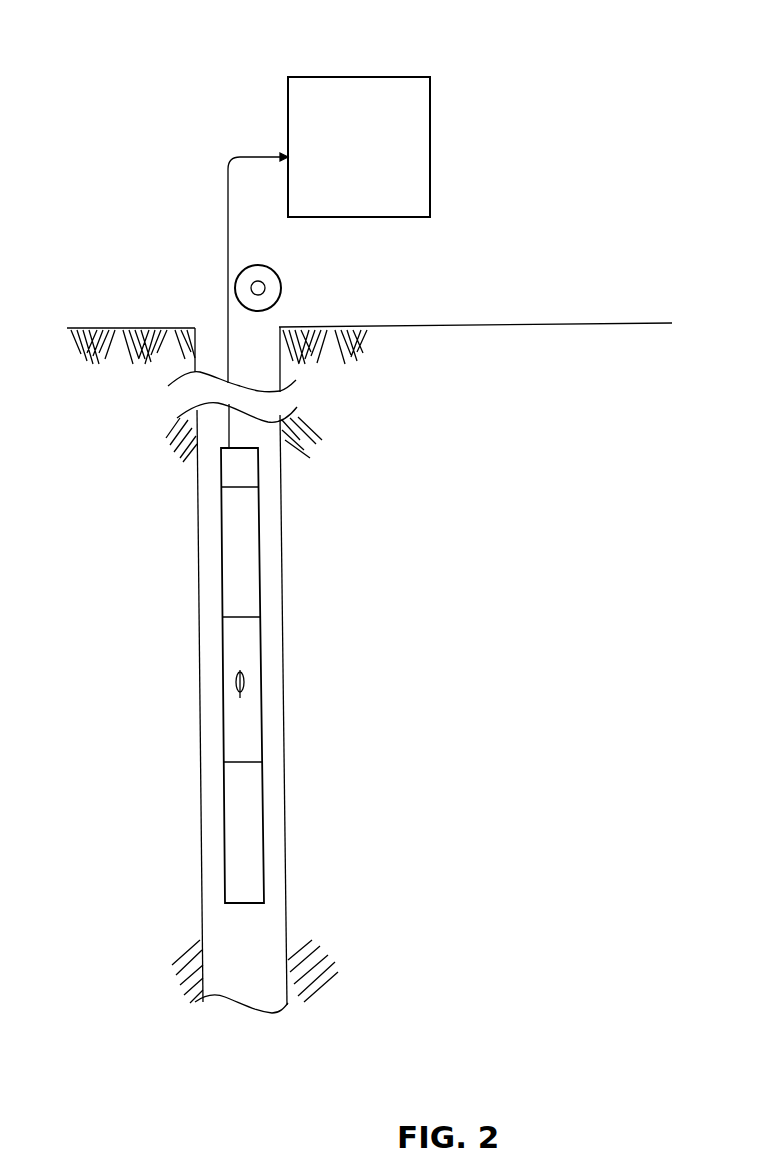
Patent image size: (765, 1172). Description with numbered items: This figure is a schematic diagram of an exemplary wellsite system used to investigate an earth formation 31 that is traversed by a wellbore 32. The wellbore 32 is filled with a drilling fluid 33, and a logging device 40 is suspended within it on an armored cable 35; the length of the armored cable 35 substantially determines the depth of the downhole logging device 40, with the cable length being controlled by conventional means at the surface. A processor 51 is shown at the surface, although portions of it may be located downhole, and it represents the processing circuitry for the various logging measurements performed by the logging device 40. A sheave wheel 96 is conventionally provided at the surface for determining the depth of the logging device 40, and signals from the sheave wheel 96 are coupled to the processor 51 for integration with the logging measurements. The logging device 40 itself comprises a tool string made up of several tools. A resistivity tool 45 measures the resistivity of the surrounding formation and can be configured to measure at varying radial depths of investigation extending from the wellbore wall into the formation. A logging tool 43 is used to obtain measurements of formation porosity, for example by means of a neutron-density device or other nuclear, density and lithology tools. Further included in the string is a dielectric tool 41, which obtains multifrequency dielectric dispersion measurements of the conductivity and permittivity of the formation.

The processor 51 is at (311, 76).
The wellbore 32 is at (216, 333).
The sheave wheel 96 is at (263, 284).
The earth formation 31 is at (122, 330).
The armored cable 35 is at (232, 345).
The drilling fluid 33 is at (210, 552).
The logging device 40 is at (215, 455).
The dielectric tool 41 is at (259, 574).
The logging tool 43 is at (248, 666).
The resistivity tool 45 is at (259, 814).